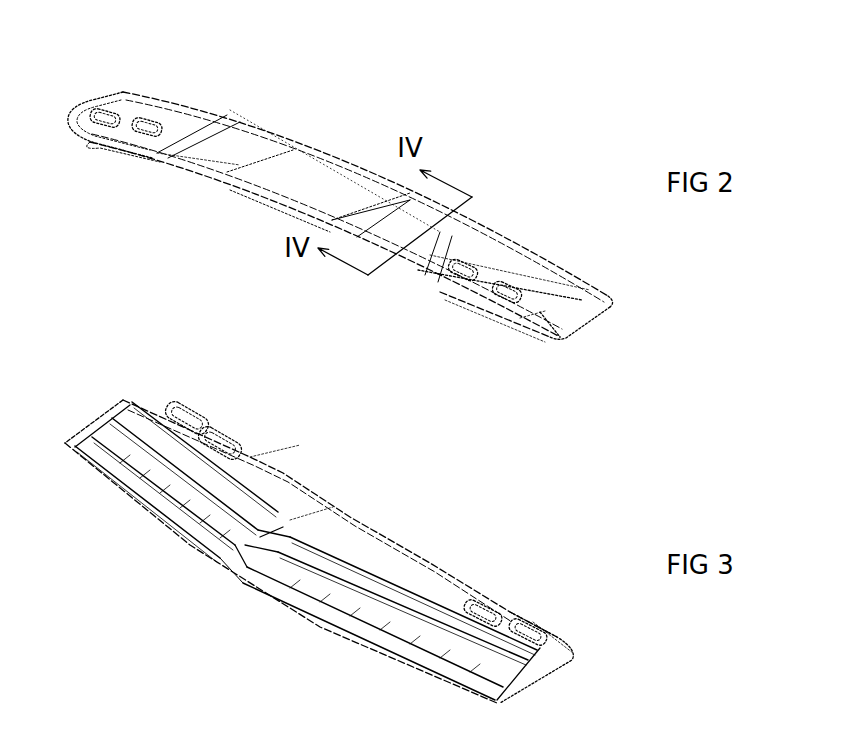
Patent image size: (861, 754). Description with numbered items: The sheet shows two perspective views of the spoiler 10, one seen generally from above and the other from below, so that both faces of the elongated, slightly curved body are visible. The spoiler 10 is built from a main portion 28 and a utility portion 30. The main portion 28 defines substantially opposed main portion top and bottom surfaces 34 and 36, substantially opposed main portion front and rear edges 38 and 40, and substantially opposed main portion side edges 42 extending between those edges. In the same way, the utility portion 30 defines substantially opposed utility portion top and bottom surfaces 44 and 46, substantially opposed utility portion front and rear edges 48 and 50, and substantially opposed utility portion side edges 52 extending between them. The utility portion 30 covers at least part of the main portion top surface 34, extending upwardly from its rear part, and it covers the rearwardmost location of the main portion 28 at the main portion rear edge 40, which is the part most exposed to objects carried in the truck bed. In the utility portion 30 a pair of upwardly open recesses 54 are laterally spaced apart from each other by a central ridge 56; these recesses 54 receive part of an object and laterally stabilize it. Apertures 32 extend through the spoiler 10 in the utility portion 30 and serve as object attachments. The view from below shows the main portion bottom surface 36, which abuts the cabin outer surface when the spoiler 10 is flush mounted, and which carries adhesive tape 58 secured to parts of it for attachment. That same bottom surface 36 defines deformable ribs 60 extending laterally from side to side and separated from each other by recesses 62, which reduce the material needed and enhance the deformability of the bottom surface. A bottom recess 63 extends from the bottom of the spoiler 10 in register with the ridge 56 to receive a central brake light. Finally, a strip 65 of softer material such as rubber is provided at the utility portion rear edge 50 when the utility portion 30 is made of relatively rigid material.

In FIG. 3, the spoiler 10 is at (507, 530).
In FIG. 2, the main portion 28 is at (506, 339).
In FIG. 2, the utility portion 30 is at (238, 120).
In FIG. 3, the utility portion 30 is at (88, 480).
In FIG. 2, the aperture 32 is at (150, 125).
In FIG. 3, the aperture 32 is at (223, 445).
In FIG. 2, the main portion top surface 34 is at (583, 300).
In FIG. 2, the main portion bottom surface 36 is at (568, 330).
In FIG. 3, the main portion bottom surface 36 is at (353, 566).
In FIG. 2, the main portion front edge 38 is at (518, 232).
In FIG. 3, the main portion front edge 38 is at (193, 548).
In FIG. 2, the main portion rear edge 40 is at (487, 305).
In FIG. 3, the main portion rear edge 40 is at (283, 473).
In FIG. 3, the main portion side edges 42 is at (100, 430).
In FIG. 2, the utility portion top surface 44 is at (303, 198).
In FIG. 2, the utility portion bottom surface 46 is at (538, 313).
In FIG. 3, the utility portion bottom surface 46 is at (568, 650).
In FIG. 2, the utility portion front edge 48 is at (327, 155).
In FIG. 2, the utility portion rear edge 50 is at (225, 185).
In FIG. 3, the utility portion rear edge 50 is at (350, 517).
In FIG. 2, the utility portion side edges 52 is at (102, 100).
In FIG. 2, the upwardly open recess 54 is at (168, 155).
In FIG. 2, the central ridge 56 is at (275, 185).
In FIG. 3, the adhesive tape 58 is at (373, 645).
In FIG. 3, the deformable ribs 60 is at (262, 537).
In FIG. 3, the recesses 62 is at (245, 540).
In FIG. 2, the bottom recess 63 is at (275, 207).
In FIG. 2, the strip 65 is at (103, 135).